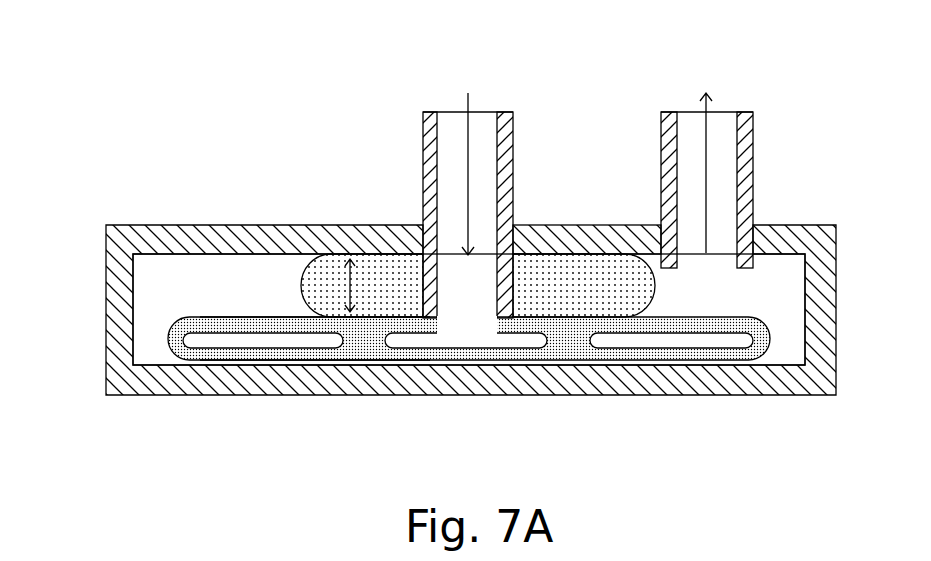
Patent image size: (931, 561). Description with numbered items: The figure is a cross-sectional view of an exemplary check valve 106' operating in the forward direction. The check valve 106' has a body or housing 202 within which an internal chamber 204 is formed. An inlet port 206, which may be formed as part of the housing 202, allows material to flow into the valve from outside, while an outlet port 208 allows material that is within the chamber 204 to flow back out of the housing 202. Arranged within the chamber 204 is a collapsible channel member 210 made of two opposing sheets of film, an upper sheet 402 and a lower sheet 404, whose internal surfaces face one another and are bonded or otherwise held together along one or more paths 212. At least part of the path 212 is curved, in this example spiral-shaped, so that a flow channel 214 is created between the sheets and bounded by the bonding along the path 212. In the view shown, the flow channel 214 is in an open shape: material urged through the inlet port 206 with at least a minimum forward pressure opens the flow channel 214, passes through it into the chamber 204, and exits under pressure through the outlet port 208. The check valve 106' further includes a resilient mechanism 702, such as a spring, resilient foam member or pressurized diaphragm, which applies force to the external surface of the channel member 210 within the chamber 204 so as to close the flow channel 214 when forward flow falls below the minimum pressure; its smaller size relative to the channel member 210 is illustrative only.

The check valve 106' is at (176, 39).
The housing 202 is at (708, 395).
The internal chamber 204 is at (769, 298).
The inlet port 206 is at (452, 112).
The outlet port 208 is at (723, 112).
The collapsible channel member 210 is at (167, 337).
The path 212 is at (360, 342).
The flow channel 214 is at (207, 340).
The upper sheet 402 is at (295, 322).
The lower sheet 404 is at (280, 353).
The resilient mechanism 702 is at (390, 282).